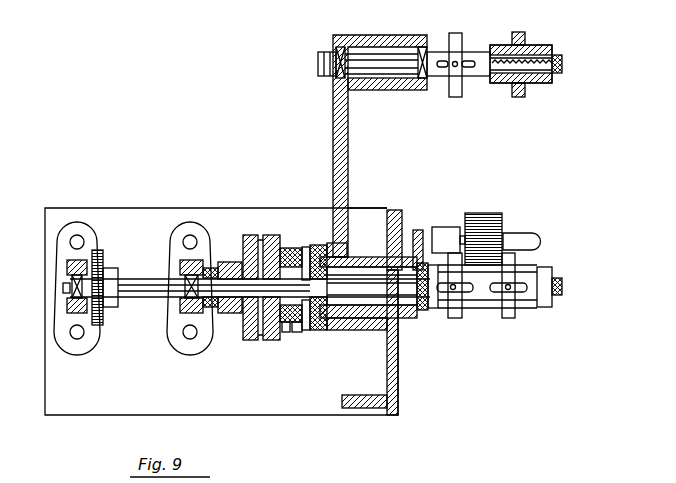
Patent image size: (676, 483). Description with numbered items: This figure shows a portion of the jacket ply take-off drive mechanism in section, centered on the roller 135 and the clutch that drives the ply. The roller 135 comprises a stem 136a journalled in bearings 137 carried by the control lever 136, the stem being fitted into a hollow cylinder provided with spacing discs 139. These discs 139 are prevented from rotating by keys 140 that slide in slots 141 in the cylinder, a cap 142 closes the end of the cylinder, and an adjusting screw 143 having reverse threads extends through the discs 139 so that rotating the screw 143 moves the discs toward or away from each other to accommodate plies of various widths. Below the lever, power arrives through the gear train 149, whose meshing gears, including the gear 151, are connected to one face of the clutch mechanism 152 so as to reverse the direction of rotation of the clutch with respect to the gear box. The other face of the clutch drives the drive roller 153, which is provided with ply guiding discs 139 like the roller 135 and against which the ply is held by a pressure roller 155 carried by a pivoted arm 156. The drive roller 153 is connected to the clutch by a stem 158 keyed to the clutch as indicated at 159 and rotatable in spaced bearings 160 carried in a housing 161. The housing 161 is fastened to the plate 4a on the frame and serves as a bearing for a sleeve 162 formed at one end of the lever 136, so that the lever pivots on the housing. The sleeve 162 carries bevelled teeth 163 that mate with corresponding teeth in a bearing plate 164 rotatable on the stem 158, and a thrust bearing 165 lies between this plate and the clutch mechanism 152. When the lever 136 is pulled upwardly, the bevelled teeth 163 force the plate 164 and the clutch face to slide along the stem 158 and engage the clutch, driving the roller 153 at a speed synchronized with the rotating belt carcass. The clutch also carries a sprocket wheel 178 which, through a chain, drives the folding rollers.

The plate 4a is at (398, 392).
The roller 135 is at (478, 42).
The control lever 136 is at (348, 120).
The stem 136a is at (388, 56).
The bearings 137 is at (335, 52).
The spacing discs 139 is at (508, 319).
The keys 140 is at (452, 84).
The slots 141 is at (485, 78).
The cap 142 is at (552, 48).
The adjusting screw 143 is at (562, 66).
The gear train 149 is at (124, 281).
The gear 151 is at (98, 325).
The clutch mechanism 152 is at (240, 314).
The drive roller 153 is at (545, 308).
The pressure roller 155 is at (495, 213).
The arm 156 is at (447, 226).
The stem 158 is at (372, 245).
The key 159 is at (290, 245).
The spaced bearings 160 is at (314, 247).
The housing 161 is at (421, 311).
The sleeve 162 is at (360, 258).
The bevelled teeth 163 is at (322, 328).
The bearing plate 164 is at (300, 331).
The thrust bearing 165 is at (296, 333).
The sprocket wheel 178 is at (284, 333).